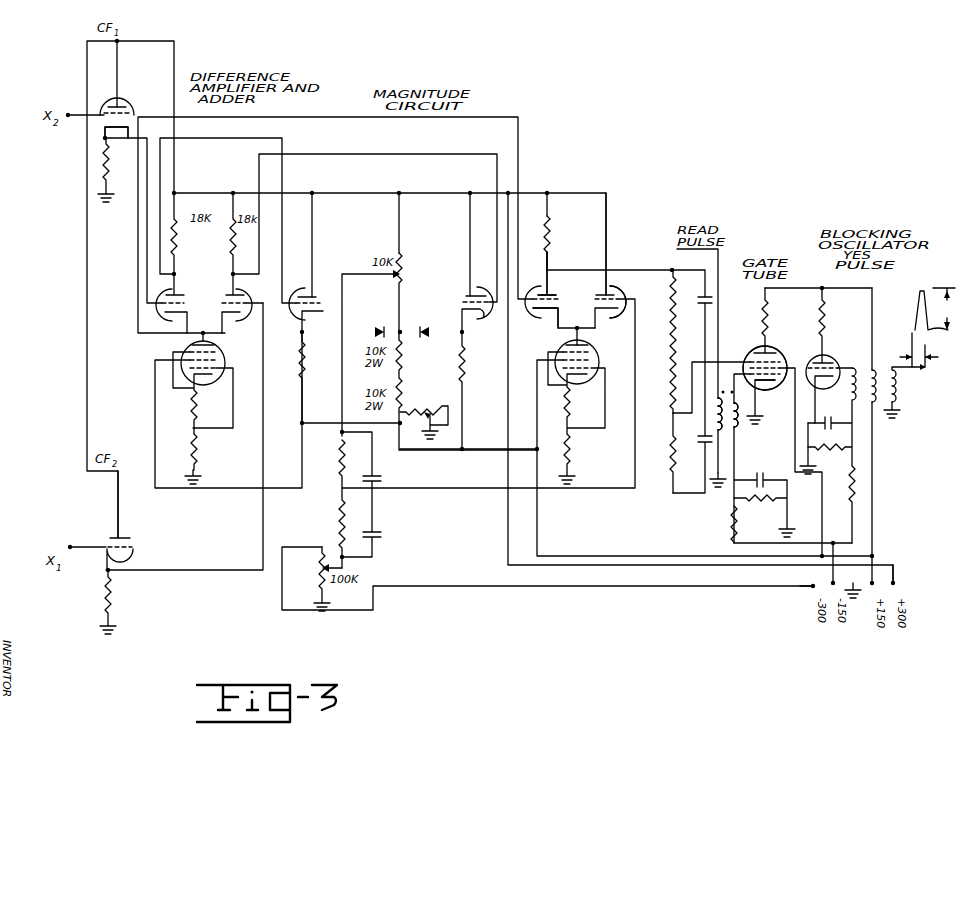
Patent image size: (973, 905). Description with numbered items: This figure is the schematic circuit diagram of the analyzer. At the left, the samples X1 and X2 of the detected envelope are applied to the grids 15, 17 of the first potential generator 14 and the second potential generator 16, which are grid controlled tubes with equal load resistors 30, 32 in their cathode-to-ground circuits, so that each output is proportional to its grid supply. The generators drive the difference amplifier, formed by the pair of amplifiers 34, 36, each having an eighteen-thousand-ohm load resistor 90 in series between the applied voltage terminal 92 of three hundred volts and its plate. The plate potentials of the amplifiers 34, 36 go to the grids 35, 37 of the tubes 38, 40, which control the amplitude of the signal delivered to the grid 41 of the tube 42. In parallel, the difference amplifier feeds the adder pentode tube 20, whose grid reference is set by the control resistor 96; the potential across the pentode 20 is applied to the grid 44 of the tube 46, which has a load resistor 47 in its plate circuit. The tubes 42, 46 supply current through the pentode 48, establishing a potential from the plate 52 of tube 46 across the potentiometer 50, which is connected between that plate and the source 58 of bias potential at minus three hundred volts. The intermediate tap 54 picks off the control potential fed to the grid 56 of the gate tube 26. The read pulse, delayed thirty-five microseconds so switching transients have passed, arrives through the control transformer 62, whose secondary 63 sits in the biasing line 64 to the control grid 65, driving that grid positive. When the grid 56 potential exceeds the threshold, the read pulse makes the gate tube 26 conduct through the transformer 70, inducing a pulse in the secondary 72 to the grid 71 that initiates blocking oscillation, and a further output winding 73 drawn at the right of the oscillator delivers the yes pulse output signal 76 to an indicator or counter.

The first potential generator 14 is at (130, 98).
The grid 15 is at (131, 112).
The load resistor 30 is at (103, 158).
The amplifier 34 is at (162, 318).
The amplifier 36 is at (250, 292).
The load resistor 90 is at (177, 238).
The adder pentode tube 20 is at (222, 356).
The grid 35 is at (322, 297).
The tube 38 is at (300, 316).
The grid 37 is at (462, 297).
The tube 40 is at (476, 387).
The control resistor 96 is at (424, 419).
The grid 17 is at (130, 542).
The second potential generator 16 is at (140, 556).
The load resistor 32 is at (106, 595).
The load resistor 47 is at (551, 243).
The tube 46 is at (529, 314).
The plate 52 is at (550, 294).
The grid 44 is at (557, 299).
The tube 42 is at (624, 292).
The grid 41 is at (617, 290).
The pentode 48 is at (594, 348).
The potentiometer 50 is at (671, 356).
The intermediate tap 54 is at (672, 435).
The gate tube 26 is at (776, 352).
The grid 56 is at (752, 355).
The control grid 65 is at (776, 384).
The secondary 63 is at (742, 425).
The control transformer 62 is at (728, 435).
The biasing line 64 is at (757, 472).
The grid 71 is at (833, 363).
The secondary 72 is at (849, 390).
The output winding 73 is at (898, 384).
The transformer 70 is at (895, 412).
The output signal 76 is at (918, 310).
The source of bias potential 58 is at (813, 586).
The terminal 92 is at (893, 583).